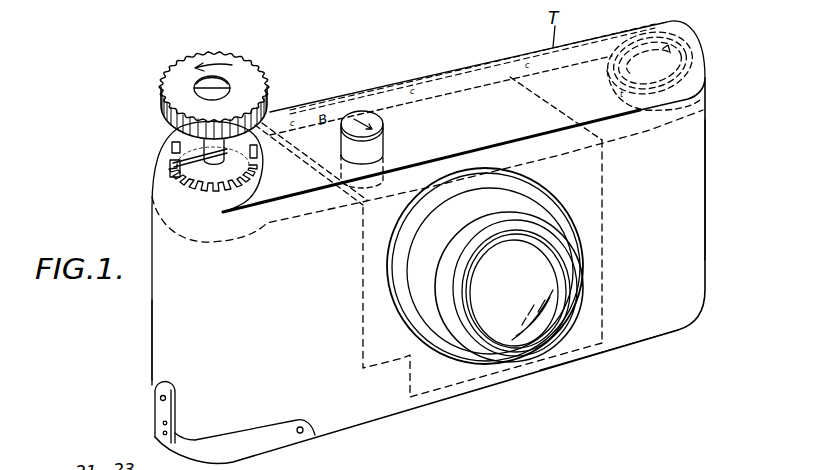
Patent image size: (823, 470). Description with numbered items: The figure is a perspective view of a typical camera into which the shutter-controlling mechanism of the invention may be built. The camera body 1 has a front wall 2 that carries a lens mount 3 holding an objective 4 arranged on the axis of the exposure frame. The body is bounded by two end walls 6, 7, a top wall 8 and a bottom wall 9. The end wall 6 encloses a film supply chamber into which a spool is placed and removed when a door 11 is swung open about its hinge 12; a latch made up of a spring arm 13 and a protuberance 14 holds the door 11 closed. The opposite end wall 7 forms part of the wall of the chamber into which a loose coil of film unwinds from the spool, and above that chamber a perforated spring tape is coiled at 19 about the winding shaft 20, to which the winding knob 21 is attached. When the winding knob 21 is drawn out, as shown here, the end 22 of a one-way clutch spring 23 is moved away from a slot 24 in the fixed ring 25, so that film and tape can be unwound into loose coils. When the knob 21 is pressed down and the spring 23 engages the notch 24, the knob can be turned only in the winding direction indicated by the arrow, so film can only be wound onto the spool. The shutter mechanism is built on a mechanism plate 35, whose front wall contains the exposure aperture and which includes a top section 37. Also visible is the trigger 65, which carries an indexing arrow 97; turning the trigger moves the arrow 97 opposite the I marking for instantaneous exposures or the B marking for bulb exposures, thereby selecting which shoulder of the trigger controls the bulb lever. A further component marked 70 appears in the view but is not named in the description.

The camera body 1 is at (370, 412).
The front wall 2 is at (452, 390).
The lens mount 3 is at (552, 212).
The objective 4 is at (533, 292).
The end wall 6 is at (160, 330).
The end wall 7 is at (708, 172).
The top wall 8 is at (488, 60).
The bottom wall 9 is at (628, 348).
The door 11 is at (268, 443).
The hinge 12 is at (305, 433).
The spring arm 13 is at (160, 420).
The protuberance 14 is at (160, 399).
The coil of tape 19 is at (668, 50).
The winding shaft 20 is at (176, 172).
The winding knob 21 is at (172, 83).
The end of one-way clutch spring 22 is at (172, 165).
The one-way clutch spring 23 is at (174, 143).
The slot 24 is at (183, 182).
The fixed ring 25 is at (250, 186).
The mechanism plate 35 is at (604, 210).
The top section 37 is at (540, 97).
The trigger 65 is at (383, 121).
The guide rail 70 is at (528, 63).
The indexing arrow 97 is at (341, 141).